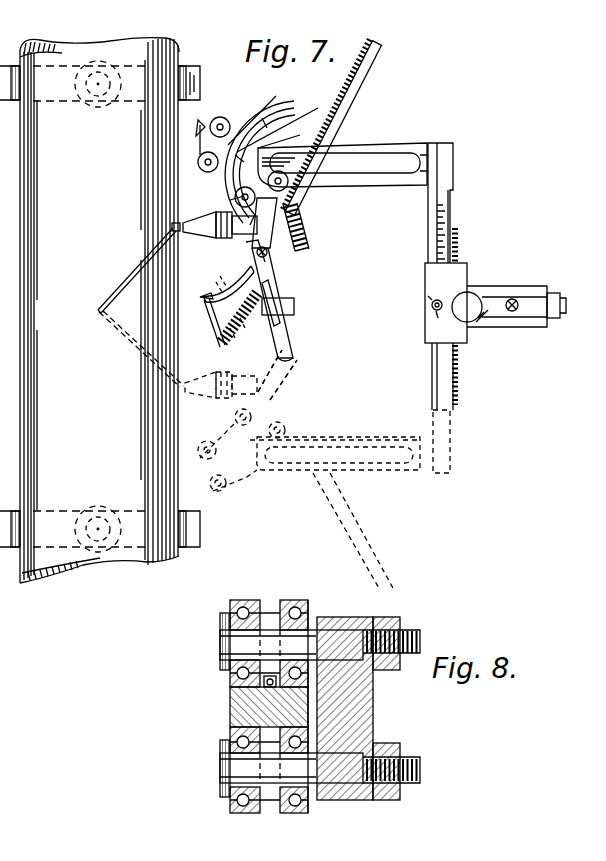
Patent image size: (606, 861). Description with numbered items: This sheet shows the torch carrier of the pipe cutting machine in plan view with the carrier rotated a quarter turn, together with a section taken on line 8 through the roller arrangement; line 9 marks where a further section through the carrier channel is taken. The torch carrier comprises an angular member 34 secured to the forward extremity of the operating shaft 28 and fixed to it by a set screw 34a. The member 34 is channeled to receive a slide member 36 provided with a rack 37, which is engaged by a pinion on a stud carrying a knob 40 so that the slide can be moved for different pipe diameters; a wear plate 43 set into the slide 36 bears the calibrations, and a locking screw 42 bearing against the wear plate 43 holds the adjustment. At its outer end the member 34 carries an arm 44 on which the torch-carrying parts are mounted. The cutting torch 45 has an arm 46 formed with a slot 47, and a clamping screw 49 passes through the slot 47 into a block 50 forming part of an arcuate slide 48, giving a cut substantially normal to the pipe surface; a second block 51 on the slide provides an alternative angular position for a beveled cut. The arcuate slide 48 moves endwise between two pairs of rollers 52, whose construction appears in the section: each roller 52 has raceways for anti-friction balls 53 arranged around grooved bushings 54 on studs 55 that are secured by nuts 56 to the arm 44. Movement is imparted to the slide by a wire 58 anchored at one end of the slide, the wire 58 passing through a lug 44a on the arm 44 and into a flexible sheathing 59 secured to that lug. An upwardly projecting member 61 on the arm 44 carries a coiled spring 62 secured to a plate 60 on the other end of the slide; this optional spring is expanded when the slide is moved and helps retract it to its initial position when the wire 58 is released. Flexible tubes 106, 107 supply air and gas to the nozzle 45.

In FIG. 7, the section line 8— 8 is at (240, 94).
In FIG. 7, the section line 9— 9 is at (585, 290).
In FIG. 7, the operating shaft 28 is at (553, 294).
In FIG. 7, the angular member 34 is at (530, 274).
In FIG. 7, the set screw 34a is at (517, 311).
In FIG. 7, the slide member 36 is at (454, 203).
In FIG. 7, the rack 37 is at (462, 244).
In FIG. 7, the knob 40 is at (477, 297).
In FIG. 7, the locking screw 42 is at (434, 301).
In FIG. 7, the wear plate 43 is at (437, 229).
In FIG. 7, the arm 44 is at (400, 184).
In FIG. 8, the arm 44 is at (374, 707).
In FIG. 7, the lug 44a is at (326, 205).
In FIG. 7, the cutting torch 45 is at (230, 233).
In FIG. 7, the arm 46 is at (278, 273).
In FIG. 7, the slot 47 is at (274, 286).
In FIG. 7, the arcuate slide 48 is at (240, 152).
In FIG. 8, the arcuate slide 48 is at (230, 707).
In FIG. 7, the clamping screw 49 is at (257, 252).
In FIG. 7, the block 50 is at (249, 272).
In FIG. 7, the block 51 is at (268, 160).
In FIG. 7, the rollers 52 is at (229, 120).
In FIG. 8, the rollers 52 is at (290, 604).
In FIG. 8, the anti-friction balls 53 is at (241, 608).
In FIG. 8, the grooved bushings 54 is at (314, 624).
In FIG. 8, the studs 55 is at (347, 637).
In FIG. 8, the nuts 56 is at (386, 671).
In FIG. 8, the wire 58 is at (268, 684).
In FIG. 7, the flexible sheathing 59 is at (310, 243).
In FIG. 7, the plate 60 is at (229, 319).
In FIG. 7, the upwardly projecting member 61 is at (346, 97).
In FIG. 7, the coiled spring 62 is at (336, 124).
In FIG. 7, the flexible tube 106 is at (300, 385).
In FIG. 7, the flexible tube 107 is at (298, 404).